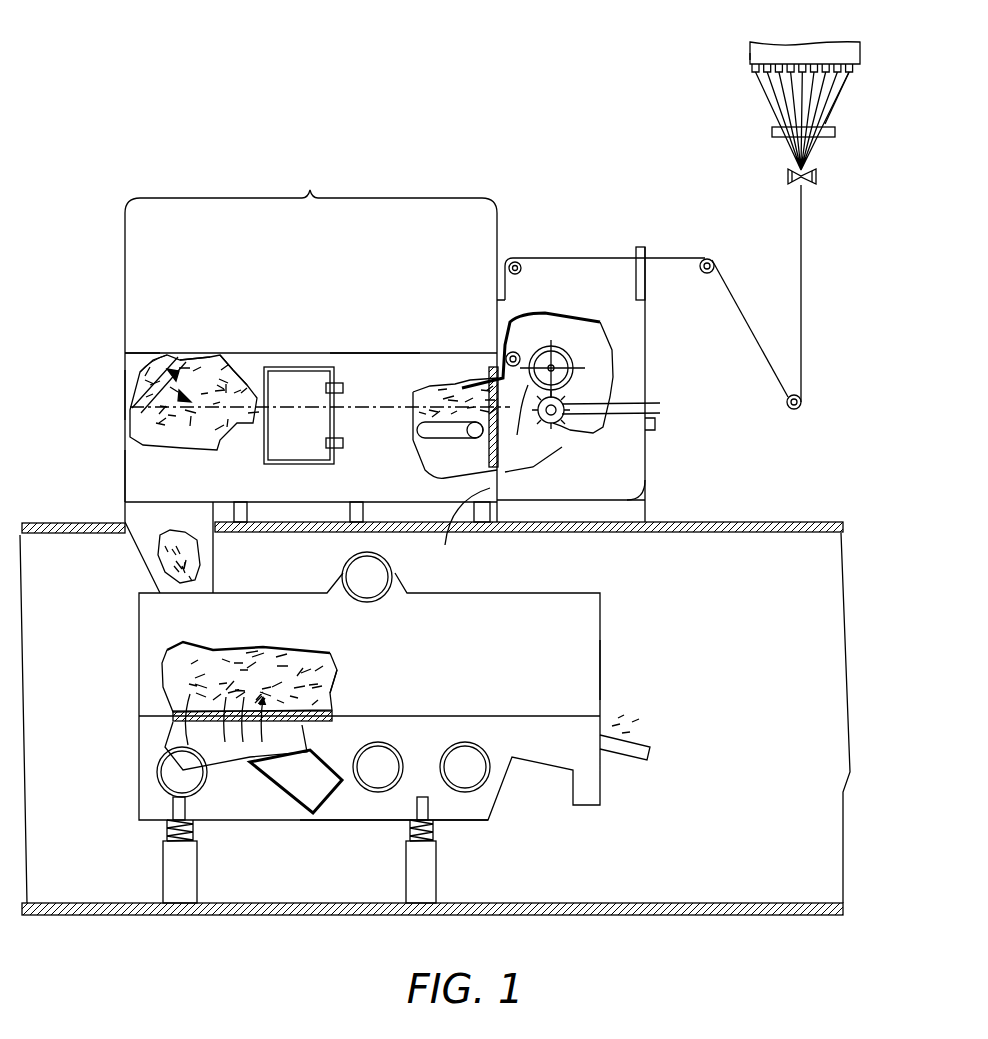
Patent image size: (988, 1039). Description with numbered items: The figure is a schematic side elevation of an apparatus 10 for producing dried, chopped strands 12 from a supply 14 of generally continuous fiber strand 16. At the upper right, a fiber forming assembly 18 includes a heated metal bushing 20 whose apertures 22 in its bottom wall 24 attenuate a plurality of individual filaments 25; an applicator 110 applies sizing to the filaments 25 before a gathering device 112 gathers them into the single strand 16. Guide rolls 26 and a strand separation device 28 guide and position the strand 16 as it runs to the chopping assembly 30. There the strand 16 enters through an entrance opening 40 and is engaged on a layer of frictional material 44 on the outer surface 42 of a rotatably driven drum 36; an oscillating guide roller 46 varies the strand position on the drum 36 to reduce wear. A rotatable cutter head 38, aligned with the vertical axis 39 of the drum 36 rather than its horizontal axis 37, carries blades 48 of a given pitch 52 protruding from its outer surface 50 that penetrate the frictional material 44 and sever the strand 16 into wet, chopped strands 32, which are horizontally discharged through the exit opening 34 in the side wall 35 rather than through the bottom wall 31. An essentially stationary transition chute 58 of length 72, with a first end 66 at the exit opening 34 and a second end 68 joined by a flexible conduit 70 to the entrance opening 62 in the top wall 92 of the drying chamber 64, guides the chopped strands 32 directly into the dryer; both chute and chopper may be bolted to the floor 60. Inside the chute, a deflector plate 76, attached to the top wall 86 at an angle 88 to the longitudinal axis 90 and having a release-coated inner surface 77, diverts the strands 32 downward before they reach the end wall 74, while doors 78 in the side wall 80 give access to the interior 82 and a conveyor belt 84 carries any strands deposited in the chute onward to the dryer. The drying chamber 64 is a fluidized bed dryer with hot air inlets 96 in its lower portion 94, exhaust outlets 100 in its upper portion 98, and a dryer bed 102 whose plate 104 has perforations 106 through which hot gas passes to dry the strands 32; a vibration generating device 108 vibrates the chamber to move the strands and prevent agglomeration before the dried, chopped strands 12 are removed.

The apparatus 10 is at (82, 303).
The dried, chopped strands 12 is at (622, 732).
The supply of generally continuous fiber strand 14 is at (710, 142).
The generally continuous fiber strand 16 is at (805, 308).
The fiber forming assembly 18 is at (858, 46).
The heated metal bushing 20 is at (750, 53).
The apertures 22 is at (763, 72).
The bottom wall 24 is at (846, 70).
The individual filaments 25 is at (823, 108).
The guide rolls 26 is at (700, 272).
The strand separation device 28 is at (645, 248).
The chopping assembly 30 is at (645, 318).
The bottom wall 31 is at (645, 482).
The wet, chopped strands 32 is at (133, 440).
The exit opening 34 is at (500, 372).
The side wall 35 is at (492, 326).
The rotatably driven drum 36 is at (573, 360).
The horizontal axis 37 is at (520, 400).
The rotatable cutter head 38 is at (553, 432).
The vertical axis 39 is at (551, 345).
The entrance opening 40 is at (508, 300).
The outer surface 42 is at (575, 362).
The layer of frictional material 44 is at (578, 392).
The oscillating guide roller 46 is at (513, 350).
The blades 48 is at (562, 430).
The outer surface 50 is at (660, 404).
The pitch 52 is at (655, 424).
The transition chute 58 is at (135, 352).
The floor 60 is at (770, 520).
The entrance opening 62 is at (150, 580).
The drying chamber 64 is at (139, 705).
The first or entrance end 66 is at (461, 530).
The second or exit end 68 is at (123, 470).
The flexible conduit 70 is at (138, 553).
The length 72 is at (311, 338).
The end wall 74 is at (125, 392).
The deflector plate 76 is at (160, 360).
The inner surface 77 is at (140, 370).
The doors 78 is at (308, 367).
The side wall 80 is at (420, 365).
The interior 82 is at (203, 360).
The conveyor belt 84 is at (432, 470).
The top wall 86 is at (358, 338).
The angle 88 is at (223, 380).
The longitudinal axis 90 is at (368, 410).
The top wall 92 is at (583, 593).
The lower portion 94 is at (470, 820).
The hot air inlets 96 is at (400, 750).
The upper portion 98 is at (600, 660).
The exhaust outlets 100 is at (390, 592).
The dryer bed 102 is at (165, 747).
The plate 104 is at (335, 683).
The perforations 106 is at (285, 727).
The vibration generating device 108 is at (300, 800).
The applicator 110 is at (778, 137).
The gathering device 112 is at (818, 176).